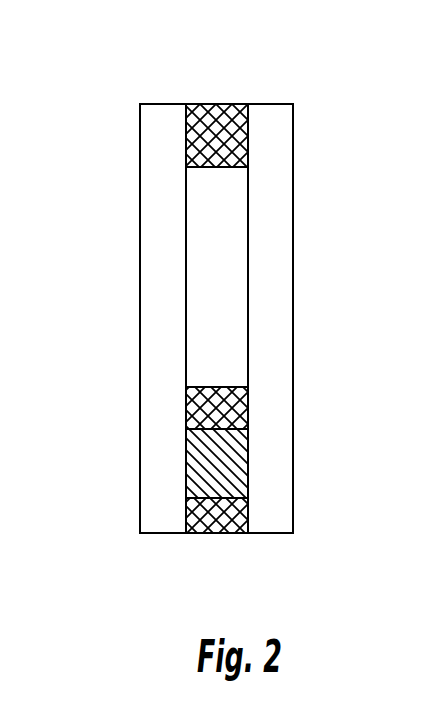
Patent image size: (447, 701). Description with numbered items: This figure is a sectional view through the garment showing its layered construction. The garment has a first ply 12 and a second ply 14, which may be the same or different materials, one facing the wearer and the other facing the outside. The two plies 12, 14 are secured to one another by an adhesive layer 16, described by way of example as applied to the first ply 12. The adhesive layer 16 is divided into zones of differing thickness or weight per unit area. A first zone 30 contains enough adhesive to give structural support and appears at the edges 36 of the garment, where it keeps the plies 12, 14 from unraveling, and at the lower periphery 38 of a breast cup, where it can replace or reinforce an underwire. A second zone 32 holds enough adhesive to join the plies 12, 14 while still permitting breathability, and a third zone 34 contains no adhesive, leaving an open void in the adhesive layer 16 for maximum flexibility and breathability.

The first ply 12 is at (157, 318).
The second ply 14 is at (280, 337).
The adhesive layer 16 is at (250, 181).
The first zone 30 is at (250, 130).
The second zone 32 is at (236, 478).
The third zone 34 is at (237, 299).
The edges 36 is at (224, 103).
The lower periphery 38 is at (184, 415).